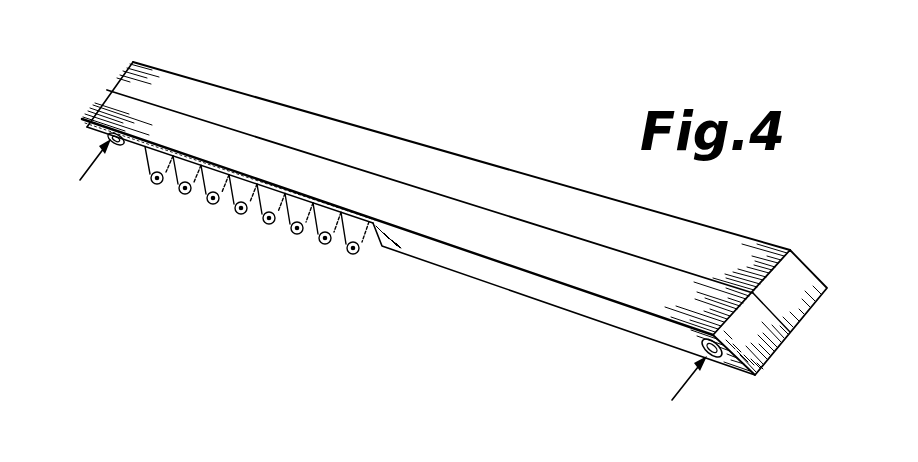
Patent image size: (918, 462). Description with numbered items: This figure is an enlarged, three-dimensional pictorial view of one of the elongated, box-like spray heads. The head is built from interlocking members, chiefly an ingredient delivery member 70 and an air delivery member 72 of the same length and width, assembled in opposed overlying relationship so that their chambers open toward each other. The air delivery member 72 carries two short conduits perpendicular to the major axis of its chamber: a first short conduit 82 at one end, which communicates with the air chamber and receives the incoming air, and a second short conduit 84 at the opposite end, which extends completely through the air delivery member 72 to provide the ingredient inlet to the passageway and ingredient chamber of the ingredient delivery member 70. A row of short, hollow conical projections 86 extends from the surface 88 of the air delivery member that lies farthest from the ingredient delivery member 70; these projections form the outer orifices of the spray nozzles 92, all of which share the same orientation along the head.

The ingredient delivery member 70 is at (454, 218).
The air delivery member 72 is at (477, 245).
The first short conduit 82 is at (720, 360).
The second short conduit 84 is at (127, 145).
The hollow conical projections 86 is at (207, 192).
The surface 88 is at (533, 287).
The spray nozzles 92 is at (274, 256).